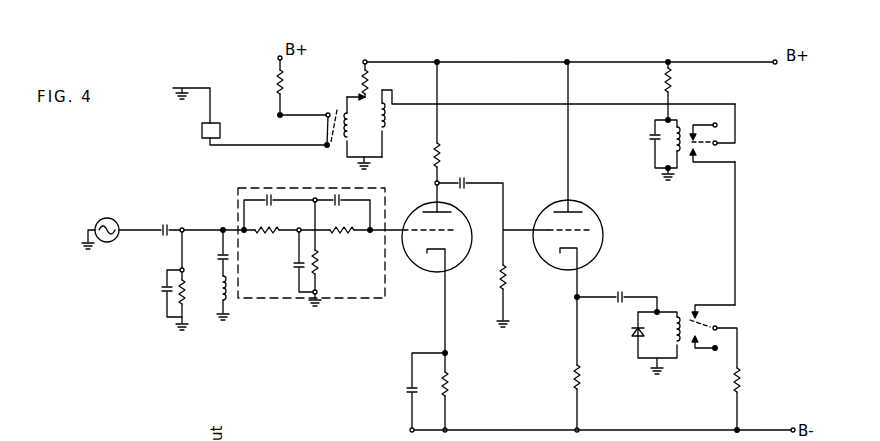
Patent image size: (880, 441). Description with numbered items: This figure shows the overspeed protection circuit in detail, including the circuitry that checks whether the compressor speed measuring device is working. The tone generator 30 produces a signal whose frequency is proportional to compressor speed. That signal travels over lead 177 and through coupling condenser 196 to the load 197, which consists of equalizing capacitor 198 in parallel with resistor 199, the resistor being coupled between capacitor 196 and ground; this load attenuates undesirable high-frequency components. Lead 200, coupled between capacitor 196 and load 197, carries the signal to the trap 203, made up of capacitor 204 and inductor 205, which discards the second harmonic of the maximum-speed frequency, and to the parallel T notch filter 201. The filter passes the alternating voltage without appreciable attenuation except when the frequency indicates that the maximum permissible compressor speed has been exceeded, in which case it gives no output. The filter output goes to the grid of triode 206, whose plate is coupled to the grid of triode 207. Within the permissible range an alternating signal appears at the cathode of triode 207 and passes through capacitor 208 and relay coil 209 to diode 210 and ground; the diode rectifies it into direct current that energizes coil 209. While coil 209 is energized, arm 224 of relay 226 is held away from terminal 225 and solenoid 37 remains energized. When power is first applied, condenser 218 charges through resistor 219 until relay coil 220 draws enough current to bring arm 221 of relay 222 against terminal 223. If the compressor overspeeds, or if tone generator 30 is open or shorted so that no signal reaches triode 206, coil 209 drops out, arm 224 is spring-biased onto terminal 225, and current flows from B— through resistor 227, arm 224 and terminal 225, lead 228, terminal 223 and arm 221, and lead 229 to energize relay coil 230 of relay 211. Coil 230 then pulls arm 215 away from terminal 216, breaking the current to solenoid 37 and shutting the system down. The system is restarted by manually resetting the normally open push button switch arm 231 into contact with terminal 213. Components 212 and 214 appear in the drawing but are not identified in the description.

The tone generator 30 is at (107, 217).
The solenoid 37 is at (202, 131).
The lead 177 is at (138, 234).
The coupling condenser 196 is at (161, 223).
The load 197 is at (169, 281).
The equalizing capacitor 198 is at (166, 292).
The resistor 199 is at (187, 293).
The lead 200 is at (205, 227).
The parallel T notch filter 201 is at (276, 300).
The trap 203 is at (226, 291).
The capacitor 204 is at (220, 258).
The inductor 205 is at (210, 313).
The triode 206 is at (423, 205).
The triode 207 is at (576, 203).
The capacitor 208 is at (624, 292).
The relay coil 209 is at (649, 323).
The diode 210 is at (633, 333).
The relay 211 is at (508, 107).
The resistor 212 is at (370, 80).
The terminal 213 is at (360, 94).
The primary winding 214 is at (347, 147).
The arm 215 is at (326, 131).
The terminal 216 is at (326, 112).
The condenser 218 is at (650, 137).
The resistor 219 is at (664, 84).
The relay coil 220 is at (688, 122).
The arm 221 is at (702, 146).
The relay 222 is at (664, 140).
The terminal 223 is at (700, 157).
The arm 224 is at (708, 322).
The terminal 225 is at (692, 304).
The relay 226 is at (689, 356).
The resistor 227 is at (741, 378).
The lead 228 is at (737, 232).
The lead 229 is at (537, 106).
The relay coil 230 is at (388, 124).
The push button switch arm 231 is at (374, 98).